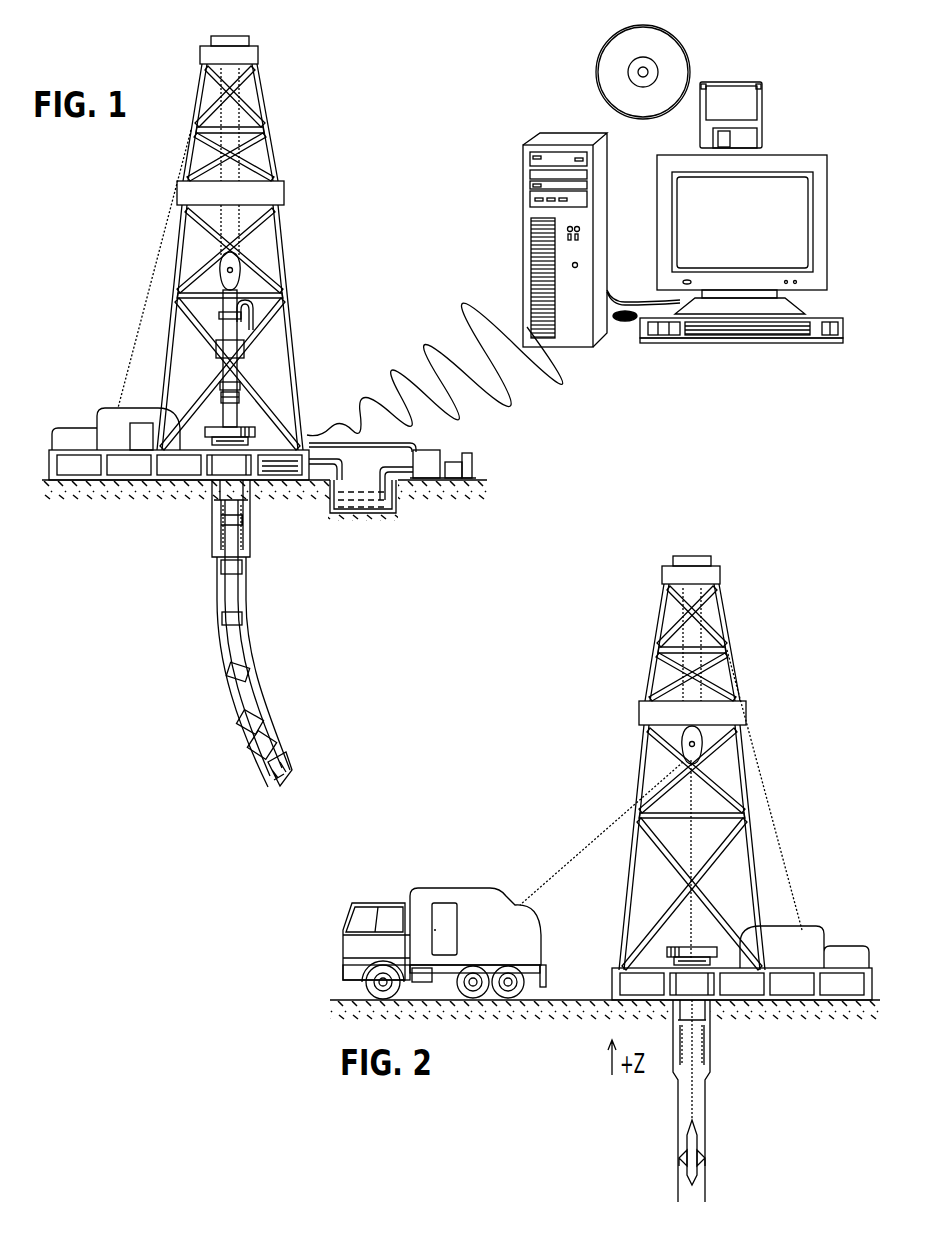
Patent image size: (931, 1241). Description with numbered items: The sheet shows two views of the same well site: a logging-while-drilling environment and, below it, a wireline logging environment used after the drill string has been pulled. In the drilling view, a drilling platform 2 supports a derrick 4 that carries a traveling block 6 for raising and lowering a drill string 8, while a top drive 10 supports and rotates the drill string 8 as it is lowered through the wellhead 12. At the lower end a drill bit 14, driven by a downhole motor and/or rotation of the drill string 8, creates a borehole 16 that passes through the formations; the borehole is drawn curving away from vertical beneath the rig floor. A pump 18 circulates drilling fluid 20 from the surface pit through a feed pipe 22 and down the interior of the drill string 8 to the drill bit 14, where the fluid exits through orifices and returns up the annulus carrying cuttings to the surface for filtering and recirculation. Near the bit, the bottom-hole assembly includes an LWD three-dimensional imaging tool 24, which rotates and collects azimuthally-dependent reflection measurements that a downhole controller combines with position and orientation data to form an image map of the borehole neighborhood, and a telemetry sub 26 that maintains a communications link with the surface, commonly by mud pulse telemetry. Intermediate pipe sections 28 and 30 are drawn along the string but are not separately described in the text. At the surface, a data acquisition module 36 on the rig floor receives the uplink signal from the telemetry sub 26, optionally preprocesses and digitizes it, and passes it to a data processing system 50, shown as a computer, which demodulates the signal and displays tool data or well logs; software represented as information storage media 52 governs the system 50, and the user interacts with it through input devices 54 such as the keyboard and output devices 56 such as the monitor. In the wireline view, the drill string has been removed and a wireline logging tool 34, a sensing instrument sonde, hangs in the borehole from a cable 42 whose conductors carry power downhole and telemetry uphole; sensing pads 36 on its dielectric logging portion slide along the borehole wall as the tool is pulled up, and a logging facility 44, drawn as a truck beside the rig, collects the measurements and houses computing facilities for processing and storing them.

In FIG. 1, the drilling platform 2 is at (50, 453).
In FIG. 2, the drilling platform 2 is at (612, 978).
In FIG. 1, the derrick 4 is at (282, 145).
In FIG. 2, the derrick 4 is at (623, 933).
In FIG. 1, the traveling block 6 is at (240, 268).
In FIG. 2, the traveling block 6 is at (680, 740).
In FIG. 1, the drill string 8 is at (233, 597).
In FIG. 1, the top drive 10 is at (228, 332).
In FIG. 1, the wellhead 12 is at (247, 423).
In FIG. 2, the wellhead 12 is at (677, 947).
In FIG. 1, the drill bit 14 is at (282, 758).
In FIG. 1, the borehole 16 is at (245, 605).
In FIG. 1, the pump 18 is at (425, 457).
In FIG. 1, the drilling fluid 20 is at (343, 503).
In FIG. 1, the feed pipe 22 is at (375, 441).
In FIG. 1, the LWD 3D imaging tool 24 is at (253, 742).
In FIG. 1, the telemetry sub 26 is at (248, 718).
In FIG. 1, the surface sensor sub 28 is at (237, 390).
In FIG. 1, the drill pipe joint 30 is at (223, 623).
In FIG. 2, the wireline logging tool 34 is at (694, 1143).
In FIG. 1, the data acquisition module 36 is at (148, 423).
In FIG. 2, the data acquisition module 36 is at (702, 1163).
In FIG. 2, the cable 42 is at (628, 808).
In FIG. 2, the logging facility 44 is at (477, 888).
In FIG. 1, the data processing system 50 is at (606, 262).
In FIG. 1, the information storage media 52 is at (716, 82).
In FIG. 1, the input devices 54 is at (817, 342).
In FIG. 1, the output devices 56 is at (812, 290).